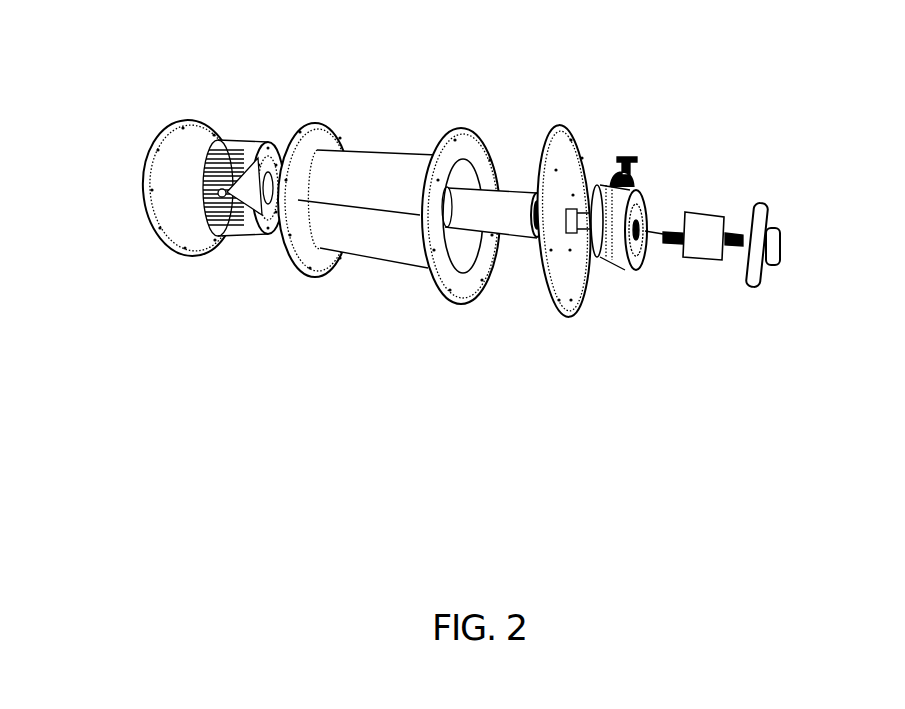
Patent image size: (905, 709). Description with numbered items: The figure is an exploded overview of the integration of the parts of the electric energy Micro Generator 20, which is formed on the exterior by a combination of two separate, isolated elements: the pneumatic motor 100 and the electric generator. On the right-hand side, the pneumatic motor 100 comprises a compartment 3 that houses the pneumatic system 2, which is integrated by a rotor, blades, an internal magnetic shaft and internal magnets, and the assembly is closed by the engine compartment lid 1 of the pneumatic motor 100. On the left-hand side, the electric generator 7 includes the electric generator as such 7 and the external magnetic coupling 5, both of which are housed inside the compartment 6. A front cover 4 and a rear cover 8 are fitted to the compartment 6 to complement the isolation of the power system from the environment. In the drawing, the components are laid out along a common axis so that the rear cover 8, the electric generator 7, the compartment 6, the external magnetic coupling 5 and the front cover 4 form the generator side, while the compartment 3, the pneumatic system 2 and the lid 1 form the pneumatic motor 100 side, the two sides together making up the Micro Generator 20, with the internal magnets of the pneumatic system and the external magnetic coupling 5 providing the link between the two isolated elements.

The engine compartment lid 1 is at (770, 272).
The pneumatic system 2 is at (712, 232).
The compartment 3 is at (628, 272).
The front cover 4 is at (571, 119).
The external magnetic coupling 5 is at (512, 232).
The compartment 6 is at (391, 148).
The electric generator 7 is at (247, 226).
The rear cover 8 is at (171, 128).
The electric energy Micro Generator 20 is at (120, 77).
The pneumatic motor 100 is at (597, 87).